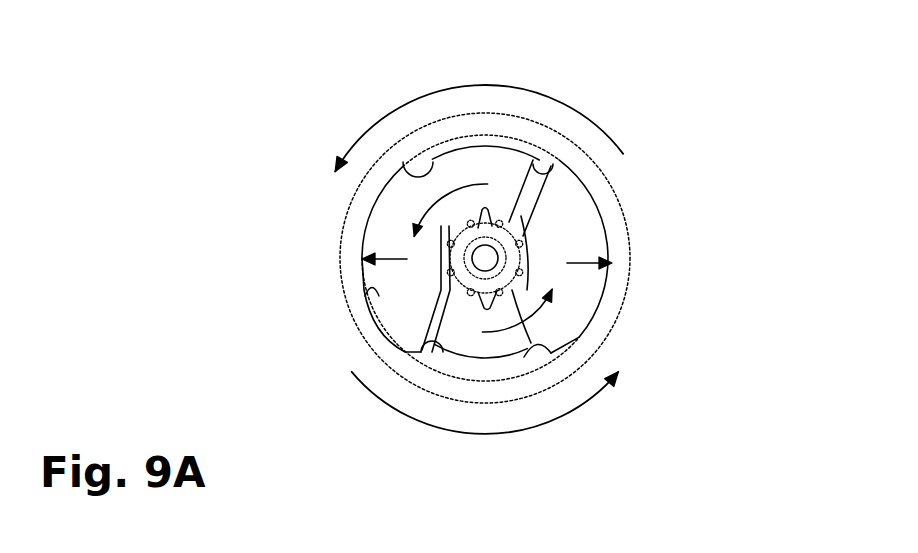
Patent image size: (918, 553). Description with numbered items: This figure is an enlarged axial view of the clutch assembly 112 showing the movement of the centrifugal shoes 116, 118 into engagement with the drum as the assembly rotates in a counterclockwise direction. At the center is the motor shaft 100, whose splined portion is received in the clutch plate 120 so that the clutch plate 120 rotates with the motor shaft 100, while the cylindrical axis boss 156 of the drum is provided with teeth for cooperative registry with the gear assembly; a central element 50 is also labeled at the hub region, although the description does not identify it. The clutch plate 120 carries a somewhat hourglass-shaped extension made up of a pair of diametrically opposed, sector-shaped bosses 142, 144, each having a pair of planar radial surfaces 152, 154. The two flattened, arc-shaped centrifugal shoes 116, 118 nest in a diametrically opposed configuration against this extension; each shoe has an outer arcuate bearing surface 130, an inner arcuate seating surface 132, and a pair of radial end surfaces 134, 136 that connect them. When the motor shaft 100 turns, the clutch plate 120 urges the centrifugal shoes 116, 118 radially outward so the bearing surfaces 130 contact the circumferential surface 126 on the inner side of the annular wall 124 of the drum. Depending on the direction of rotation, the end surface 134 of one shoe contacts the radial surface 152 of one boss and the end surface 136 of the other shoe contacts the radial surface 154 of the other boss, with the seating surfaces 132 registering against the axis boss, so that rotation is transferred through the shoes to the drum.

The clutch assembly 112 is at (720, 92).
The annular wall 124 is at (620, 322).
The planar radial surface 152 is at (463, 220).
The planar radial surface 154 is at (524, 348).
The sector-shaped boss 142 is at (490, 160).
The clutch plate 120 is at (503, 367).
The centrifugal shoe 116 is at (378, 241).
The centrifugal shoe 118 is at (583, 232).
The radial end surface 134 is at (465, 220).
The radial end surface 136 is at (432, 350).
The sun gear 50 is at (440, 245).
The motor shaft 100 is at (485, 260).
The cylindrical axis boss 156 is at (490, 222).
The circumferential surface 126 is at (441, 265).
The inner arcuate seating surface 132 is at (440, 300).
The outer arcuate bearing surface 130 is at (372, 259).
The sector-shaped boss 144 is at (475, 350).